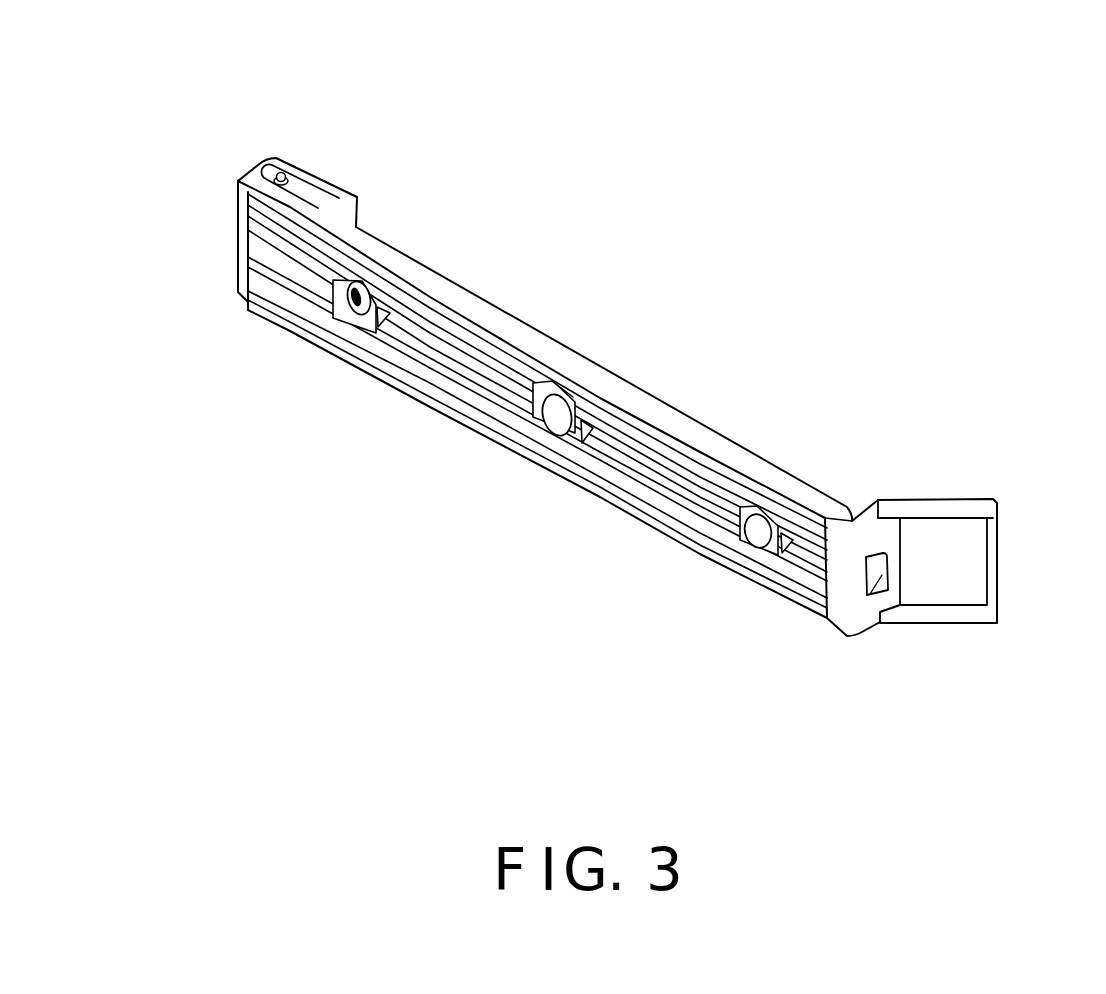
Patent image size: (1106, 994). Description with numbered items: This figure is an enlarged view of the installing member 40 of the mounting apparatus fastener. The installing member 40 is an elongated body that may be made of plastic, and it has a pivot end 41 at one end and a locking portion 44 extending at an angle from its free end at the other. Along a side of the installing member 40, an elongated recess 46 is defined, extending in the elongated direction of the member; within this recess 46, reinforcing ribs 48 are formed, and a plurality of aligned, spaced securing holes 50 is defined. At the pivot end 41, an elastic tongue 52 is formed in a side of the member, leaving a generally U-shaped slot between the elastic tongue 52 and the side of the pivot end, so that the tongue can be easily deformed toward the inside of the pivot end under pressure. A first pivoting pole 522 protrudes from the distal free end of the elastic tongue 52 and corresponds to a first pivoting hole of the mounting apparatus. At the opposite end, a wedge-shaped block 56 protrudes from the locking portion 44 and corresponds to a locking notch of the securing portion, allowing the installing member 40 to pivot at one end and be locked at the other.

The installing member 40 is at (623, 37).
The pivot end 41 is at (354, 201).
The locking portion 44 is at (995, 574).
The elongated recess 46 is at (475, 362).
The reinforcing ribs 48 is at (635, 465).
The securing holes 50 is at (755, 545).
The elastic tongue 52 is at (304, 196).
The first pivoting pole 522 is at (284, 171).
The wedge-shaped block 56 is at (870, 596).